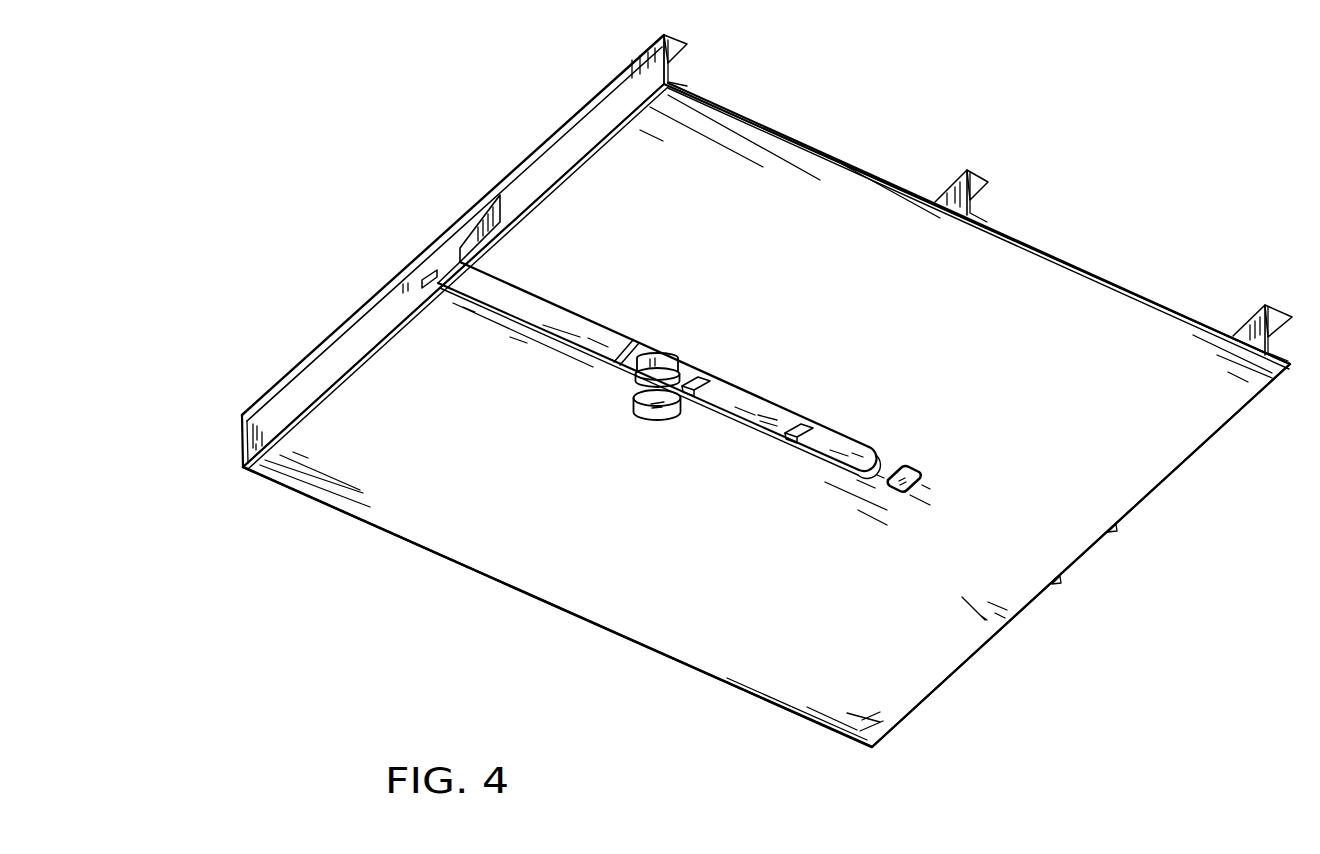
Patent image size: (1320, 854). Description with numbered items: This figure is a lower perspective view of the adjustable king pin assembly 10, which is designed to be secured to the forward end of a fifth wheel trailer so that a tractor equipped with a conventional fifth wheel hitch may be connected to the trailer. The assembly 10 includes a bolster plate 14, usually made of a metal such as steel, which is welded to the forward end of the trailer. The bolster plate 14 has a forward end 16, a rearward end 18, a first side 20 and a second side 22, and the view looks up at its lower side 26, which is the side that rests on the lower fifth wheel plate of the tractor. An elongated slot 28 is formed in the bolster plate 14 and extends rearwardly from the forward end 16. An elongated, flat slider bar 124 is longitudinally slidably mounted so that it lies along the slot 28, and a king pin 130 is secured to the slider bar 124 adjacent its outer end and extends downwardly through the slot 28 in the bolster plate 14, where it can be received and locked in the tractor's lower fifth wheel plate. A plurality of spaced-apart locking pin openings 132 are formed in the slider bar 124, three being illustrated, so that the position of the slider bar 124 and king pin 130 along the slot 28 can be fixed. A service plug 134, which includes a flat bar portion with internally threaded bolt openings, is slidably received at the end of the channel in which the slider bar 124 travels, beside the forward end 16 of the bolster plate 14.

The adjustable king pin assembly 10 is at (1080, 188).
The bolster plate 14 is at (911, 142).
The forward end 16 is at (395, 266).
The rearward end 18 is at (1097, 574).
The first side 20 is at (1170, 254).
The second side 22 is at (622, 650).
The lower side 26 is at (1034, 366).
The elongated slot 28 is at (734, 400).
The slider bar 124 is at (741, 430).
The king pin 130 is at (648, 412).
The locking pin openings 132 is at (811, 424).
The service plug 134 is at (549, 296).